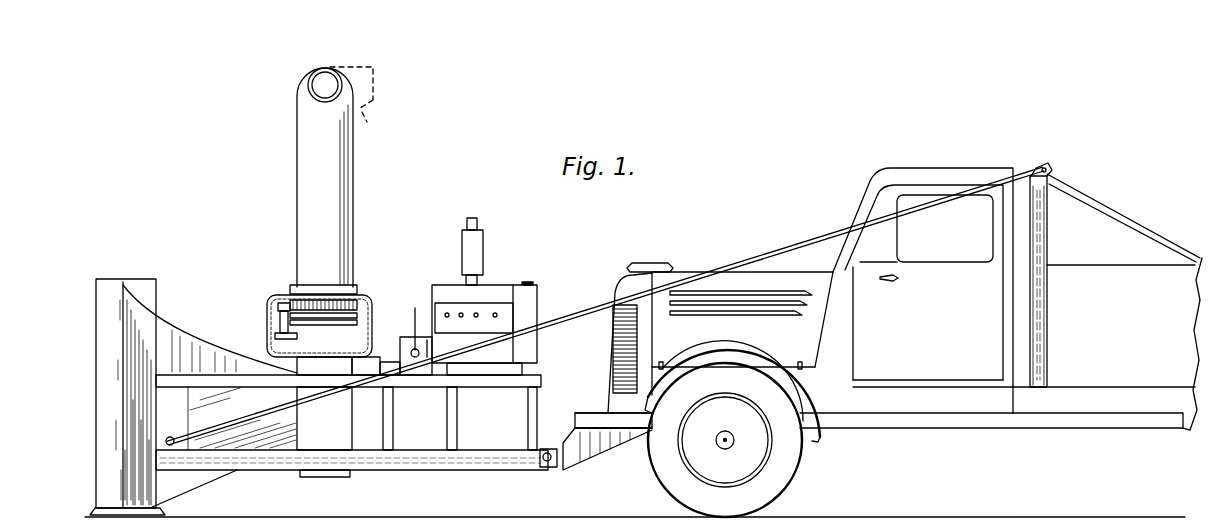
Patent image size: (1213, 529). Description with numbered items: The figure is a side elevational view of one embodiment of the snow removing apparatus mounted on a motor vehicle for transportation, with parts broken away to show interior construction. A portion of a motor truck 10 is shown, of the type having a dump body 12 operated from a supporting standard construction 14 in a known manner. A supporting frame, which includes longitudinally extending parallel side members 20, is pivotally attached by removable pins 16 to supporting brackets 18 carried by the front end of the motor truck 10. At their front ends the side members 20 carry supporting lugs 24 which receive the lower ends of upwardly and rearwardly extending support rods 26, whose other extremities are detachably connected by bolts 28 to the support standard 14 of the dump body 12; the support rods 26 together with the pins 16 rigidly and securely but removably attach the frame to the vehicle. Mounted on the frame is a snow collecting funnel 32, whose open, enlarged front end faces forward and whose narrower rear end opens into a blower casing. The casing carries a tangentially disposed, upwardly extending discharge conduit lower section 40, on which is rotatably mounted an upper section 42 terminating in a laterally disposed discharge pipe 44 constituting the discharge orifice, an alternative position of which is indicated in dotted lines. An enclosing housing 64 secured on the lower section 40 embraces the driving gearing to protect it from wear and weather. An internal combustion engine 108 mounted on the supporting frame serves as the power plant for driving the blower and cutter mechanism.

The motor truck 10 is at (685, 267).
The dump body 12 is at (1127, 280).
The supporting standard construction 14 is at (1046, 218).
The removable pins 16 is at (549, 450).
The supporting brackets 18 is at (594, 440).
The side members 20 is at (257, 456).
The supporting lugs 24 is at (170, 436).
The support rods 26 is at (570, 313).
The bolts 28 is at (1038, 167).
The snow collecting funnel 32 is at (217, 352).
The discharge conduit lower section 40 is at (368, 338).
The upper section 42 is at (310, 188).
The discharge pipe 44 is at (309, 93).
The enclosing housing 64 is at (372, 308).
The internal combustion engine 108 is at (493, 282).